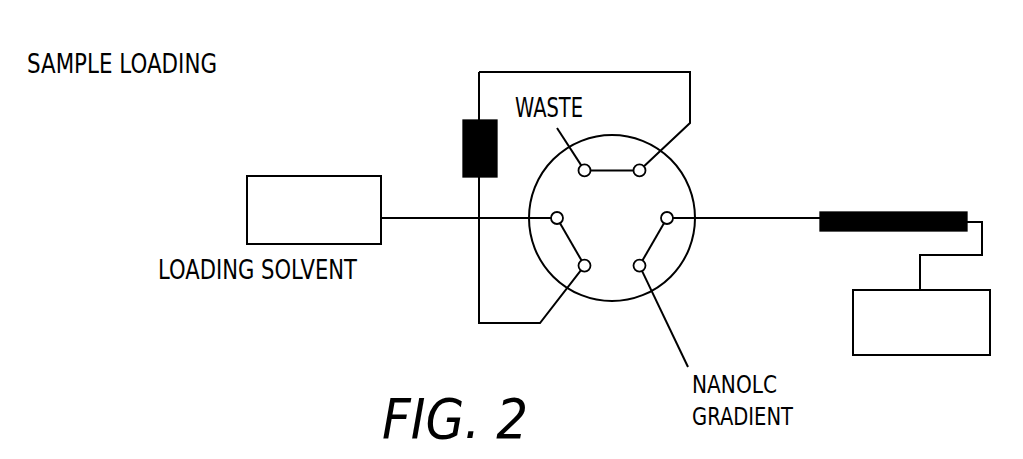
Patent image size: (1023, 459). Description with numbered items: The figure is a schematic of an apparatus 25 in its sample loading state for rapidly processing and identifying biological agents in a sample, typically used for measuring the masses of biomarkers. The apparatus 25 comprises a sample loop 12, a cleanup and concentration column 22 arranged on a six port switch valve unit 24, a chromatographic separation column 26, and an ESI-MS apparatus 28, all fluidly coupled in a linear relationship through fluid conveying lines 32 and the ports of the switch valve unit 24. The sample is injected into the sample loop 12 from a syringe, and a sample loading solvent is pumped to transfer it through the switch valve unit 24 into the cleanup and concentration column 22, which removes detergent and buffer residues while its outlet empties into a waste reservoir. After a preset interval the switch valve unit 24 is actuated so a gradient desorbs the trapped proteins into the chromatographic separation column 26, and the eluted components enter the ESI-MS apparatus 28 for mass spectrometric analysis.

The sample loop 12 is at (308, 176).
The cleanup and concentration column 22 is at (463, 140).
The six port switch valve unit 24 is at (617, 301).
The apparatus 25 is at (925, 98).
The chromatographic separation column 26 is at (880, 212).
The ionization source-mass spectrometry (ESI-MS) apparatus 28 is at (912, 355).
The fluid conveying lines 32 is at (620, 72).